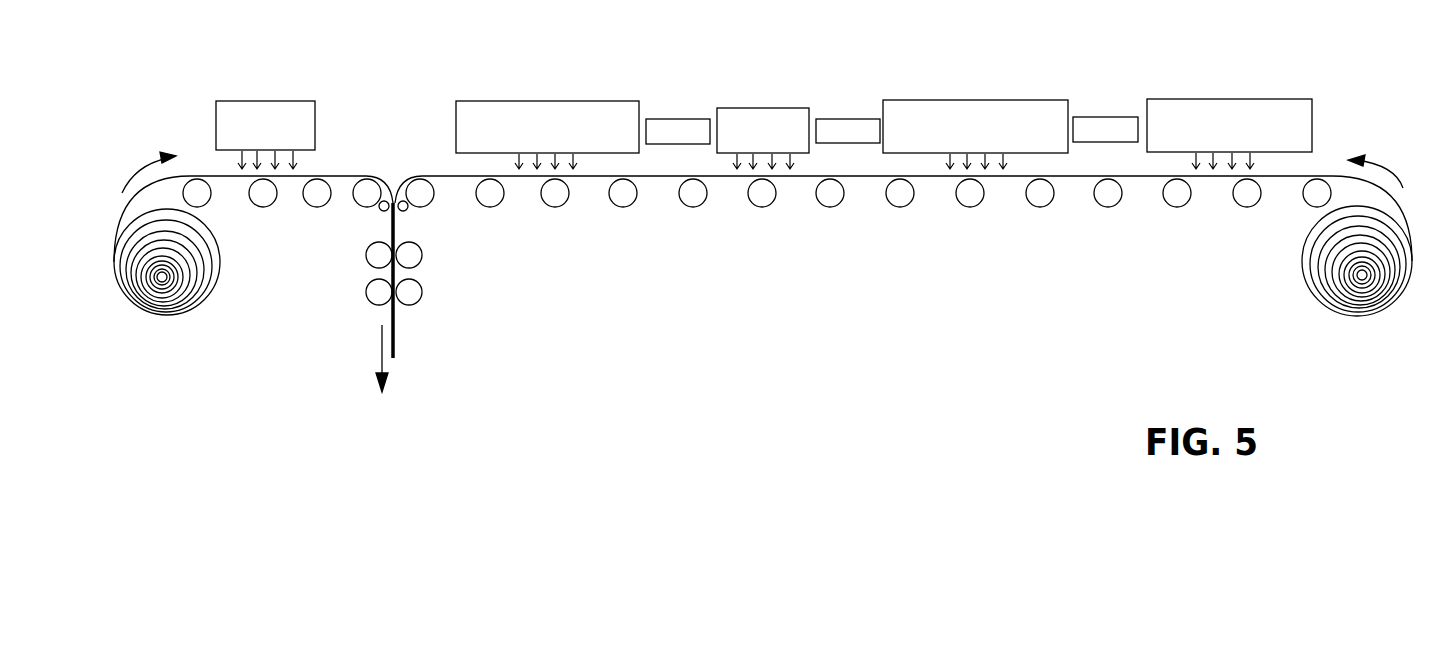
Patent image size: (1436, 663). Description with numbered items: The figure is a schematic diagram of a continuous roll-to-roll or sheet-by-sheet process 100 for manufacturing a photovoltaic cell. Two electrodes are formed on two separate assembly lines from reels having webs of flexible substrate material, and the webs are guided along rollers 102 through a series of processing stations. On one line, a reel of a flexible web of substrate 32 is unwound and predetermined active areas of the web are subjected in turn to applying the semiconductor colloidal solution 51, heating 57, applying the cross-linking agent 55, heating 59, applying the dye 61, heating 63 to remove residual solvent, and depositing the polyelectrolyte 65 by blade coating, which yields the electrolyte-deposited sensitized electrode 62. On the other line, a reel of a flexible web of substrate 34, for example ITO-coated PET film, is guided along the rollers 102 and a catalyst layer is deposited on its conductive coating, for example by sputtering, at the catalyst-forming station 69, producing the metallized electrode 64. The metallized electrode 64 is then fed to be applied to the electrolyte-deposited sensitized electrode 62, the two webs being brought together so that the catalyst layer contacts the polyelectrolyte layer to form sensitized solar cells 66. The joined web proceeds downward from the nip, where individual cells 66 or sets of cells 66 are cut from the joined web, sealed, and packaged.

The continuous roll-to-roll or sheet-by-sheet process 100 is at (923, 368).
The substrate 34 is at (138, 310).
The substrate 32 is at (1308, 280).
The metallized substrate or electrode 64 is at (330, 175).
The electrolyte-deposited sensitized electrode 62 is at (442, 175).
The rollers 102 is at (263, 207).
The sensitized solar cell 66 is at (395, 331).
The catalyst layer forming step 69 is at (263, 100).
The polyelectrolyte depositing step 65 is at (537, 100).
The heating step 63 is at (670, 119).
The dye applying step 61 is at (778, 108).
The heating step 59 is at (837, 119).
The cross-linking agent applying step 55 is at (975, 100).
The heating step 57 is at (1100, 117).
The semiconductor applying step 51 is at (1303, 99).